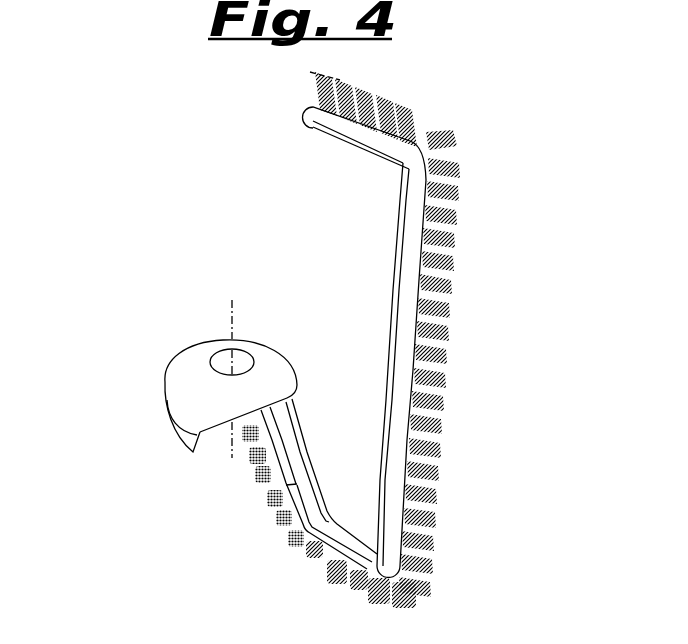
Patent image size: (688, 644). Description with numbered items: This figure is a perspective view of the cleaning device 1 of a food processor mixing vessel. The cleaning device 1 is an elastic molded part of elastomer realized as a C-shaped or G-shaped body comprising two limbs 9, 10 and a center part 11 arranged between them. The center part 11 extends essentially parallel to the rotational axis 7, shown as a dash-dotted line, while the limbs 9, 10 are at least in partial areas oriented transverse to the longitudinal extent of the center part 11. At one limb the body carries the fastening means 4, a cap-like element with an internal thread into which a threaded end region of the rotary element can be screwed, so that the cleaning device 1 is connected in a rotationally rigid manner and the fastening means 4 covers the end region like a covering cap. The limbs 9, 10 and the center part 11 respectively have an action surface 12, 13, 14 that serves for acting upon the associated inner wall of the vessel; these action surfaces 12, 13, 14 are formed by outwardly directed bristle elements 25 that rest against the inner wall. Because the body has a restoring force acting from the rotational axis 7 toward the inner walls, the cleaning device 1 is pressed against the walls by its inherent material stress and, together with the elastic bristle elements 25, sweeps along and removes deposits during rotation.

The cleaning device 1 is at (504, 140).
The fastening means 4 is at (197, 367).
The rotational axis 7 is at (236, 310).
The limb 9 is at (360, 137).
The limb 10 is at (341, 533).
The center part 11 is at (403, 303).
The action surface 12 is at (425, 120).
The action surface 13 is at (443, 400).
The action surface 14 is at (330, 572).
The bristle elements 25 is at (366, 320).